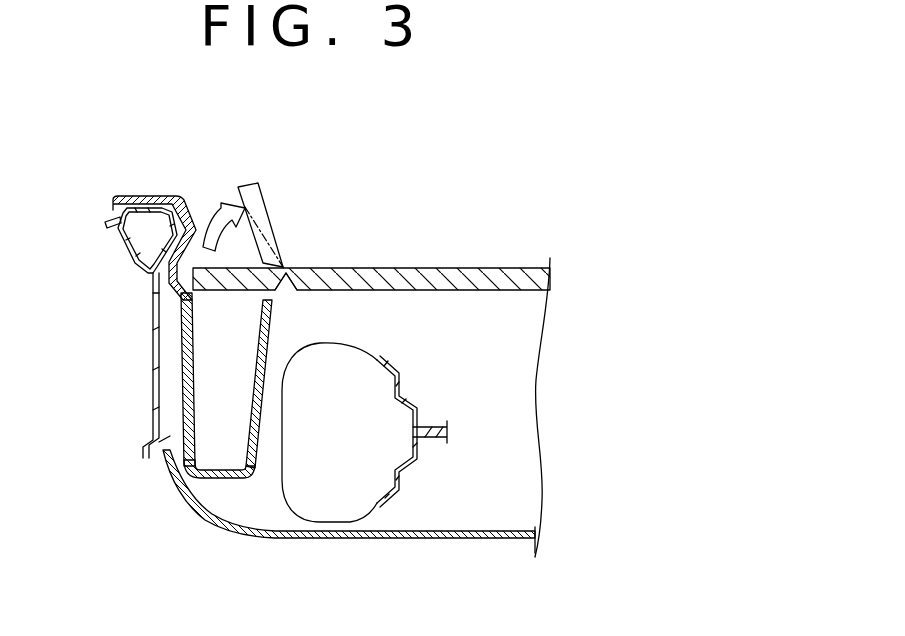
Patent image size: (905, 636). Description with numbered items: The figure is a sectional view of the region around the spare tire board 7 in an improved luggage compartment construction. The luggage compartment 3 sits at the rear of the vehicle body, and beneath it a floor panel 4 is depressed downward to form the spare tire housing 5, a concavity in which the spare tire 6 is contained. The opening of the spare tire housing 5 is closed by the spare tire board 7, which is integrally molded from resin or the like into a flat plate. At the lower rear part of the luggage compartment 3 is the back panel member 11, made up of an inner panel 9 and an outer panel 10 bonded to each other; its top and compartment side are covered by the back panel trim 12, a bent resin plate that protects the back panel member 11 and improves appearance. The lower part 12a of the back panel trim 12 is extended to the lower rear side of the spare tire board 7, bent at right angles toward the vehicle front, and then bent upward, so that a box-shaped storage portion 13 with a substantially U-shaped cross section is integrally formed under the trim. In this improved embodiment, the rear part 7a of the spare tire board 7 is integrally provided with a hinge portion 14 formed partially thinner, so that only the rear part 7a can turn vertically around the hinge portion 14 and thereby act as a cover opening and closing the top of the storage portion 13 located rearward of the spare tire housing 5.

The luggage compartment 3 is at (398, 153).
The floor panel 4 is at (267, 539).
The spare tire housing 5 is at (506, 361).
The spare tire 6 is at (390, 498).
The spare tire board 7 is at (441, 268).
The rear part 7a is at (263, 201).
The inner panel 9 is at (160, 207).
The outer panel 10 is at (136, 266).
The back panel member 11 is at (112, 249).
The back panel trim 12 is at (141, 184).
The lower part 12a is at (181, 390).
The storage portion 13 is at (202, 443).
The hinge portion 14 is at (285, 278).